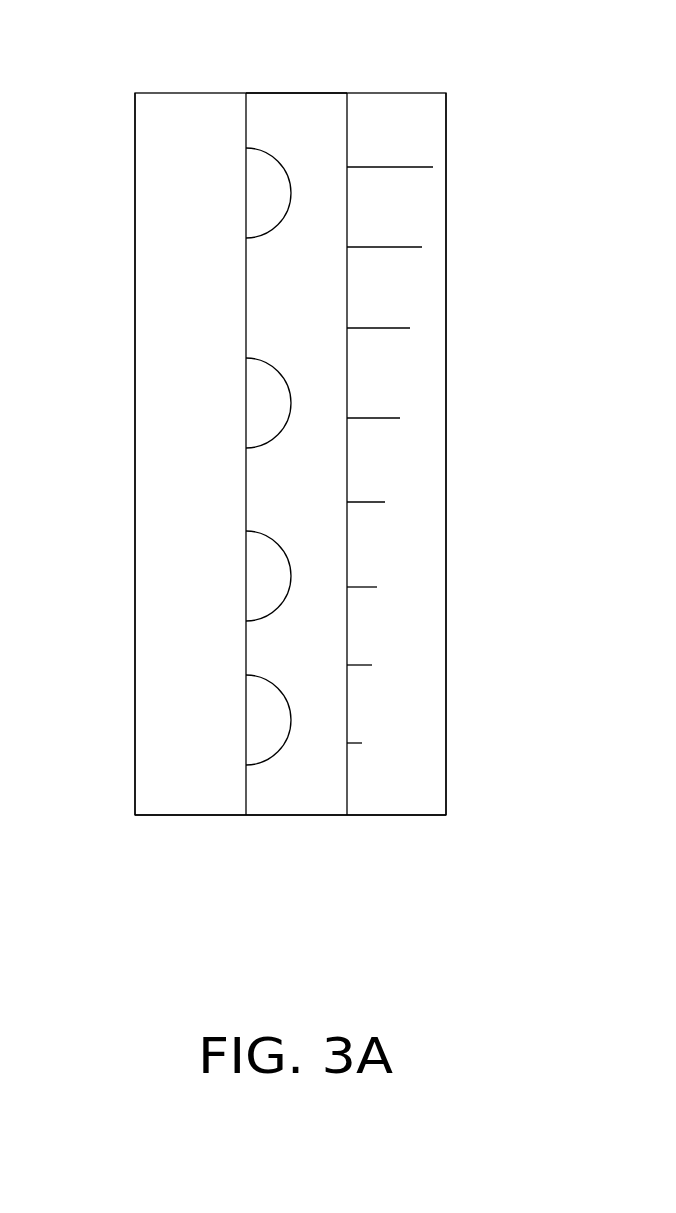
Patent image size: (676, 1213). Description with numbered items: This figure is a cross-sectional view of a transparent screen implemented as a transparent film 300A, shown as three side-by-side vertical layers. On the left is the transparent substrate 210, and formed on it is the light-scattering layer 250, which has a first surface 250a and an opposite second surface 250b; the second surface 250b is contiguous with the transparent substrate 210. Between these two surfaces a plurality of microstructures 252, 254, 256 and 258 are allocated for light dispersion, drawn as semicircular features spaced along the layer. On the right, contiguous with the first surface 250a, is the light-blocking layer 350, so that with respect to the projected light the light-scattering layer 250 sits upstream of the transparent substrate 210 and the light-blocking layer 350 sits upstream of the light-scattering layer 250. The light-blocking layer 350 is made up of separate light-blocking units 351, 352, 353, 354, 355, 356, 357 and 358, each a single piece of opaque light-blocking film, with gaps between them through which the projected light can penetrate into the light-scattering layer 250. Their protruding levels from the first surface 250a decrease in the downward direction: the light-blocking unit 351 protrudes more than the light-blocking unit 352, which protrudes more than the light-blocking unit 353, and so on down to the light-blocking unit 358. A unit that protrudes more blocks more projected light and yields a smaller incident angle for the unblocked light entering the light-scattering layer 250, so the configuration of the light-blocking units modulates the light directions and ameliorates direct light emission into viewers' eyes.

The transparent film 300A is at (558, 946).
The transparent substrate 210 is at (188, 805).
The light-scattering layer 250 is at (295, 805).
The light-blocking layer 350 is at (393, 805).
The first surface 250a is at (347, 125).
The second surface 250b is at (246, 125).
The microstructure 252 is at (265, 193).
The microstructure 254 is at (265, 405).
The microstructure 256 is at (265, 572).
The microstructure 258 is at (265, 718).
The light-blocking unit 351 is at (423, 166).
The light-blocking unit 352 is at (412, 246).
The light-blocking unit 353 is at (400, 328).
The light-blocking unit 354 is at (392, 418).
The light-blocking unit 355 is at (378, 502).
The light-blocking unit 356 is at (368, 586).
The light-blocking unit 357 is at (362, 664).
The light-blocking unit 358 is at (352, 742).